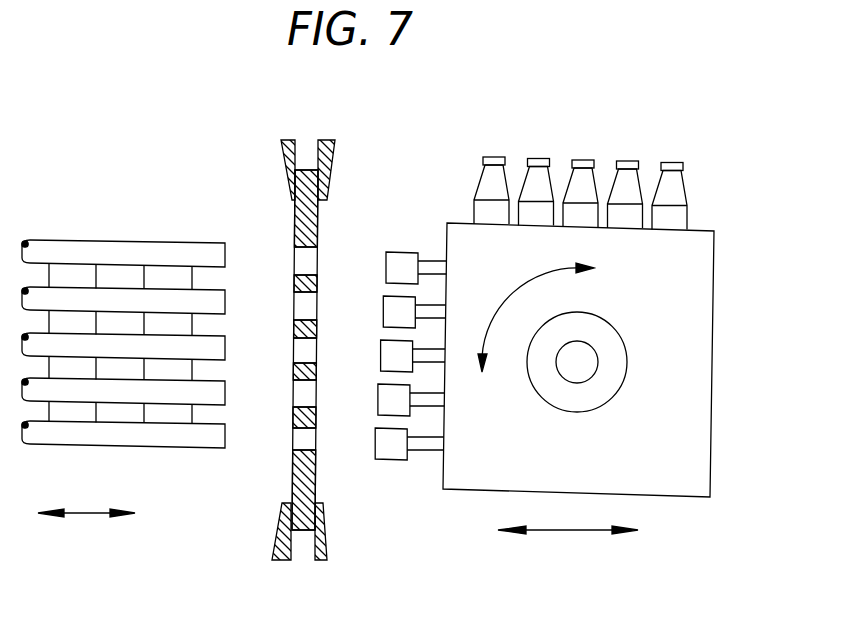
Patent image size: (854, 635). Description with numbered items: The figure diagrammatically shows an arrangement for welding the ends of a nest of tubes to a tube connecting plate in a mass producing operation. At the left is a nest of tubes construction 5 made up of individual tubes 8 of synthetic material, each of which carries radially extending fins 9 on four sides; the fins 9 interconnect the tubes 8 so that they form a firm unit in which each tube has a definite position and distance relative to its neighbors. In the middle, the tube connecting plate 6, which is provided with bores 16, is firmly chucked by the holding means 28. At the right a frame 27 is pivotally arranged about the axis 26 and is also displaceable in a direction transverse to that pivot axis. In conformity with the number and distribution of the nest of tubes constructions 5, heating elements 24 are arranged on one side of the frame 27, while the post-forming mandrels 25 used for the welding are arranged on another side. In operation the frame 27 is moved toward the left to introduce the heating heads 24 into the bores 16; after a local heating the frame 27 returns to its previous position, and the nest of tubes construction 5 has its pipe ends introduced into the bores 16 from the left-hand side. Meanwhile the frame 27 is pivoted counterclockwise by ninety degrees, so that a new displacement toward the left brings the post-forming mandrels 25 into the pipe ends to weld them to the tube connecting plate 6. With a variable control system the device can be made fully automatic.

The nest of tubes construction 5 is at (123, 321).
The tube 8 is at (127, 247).
The fins 9 is at (73, 408).
The bores 16 is at (297, 428).
The tube connecting plate 6 is at (269, 350).
The holding means 28 is at (276, 545).
The post-forming mandrels 25 is at (490, 183).
The axis 26 is at (577, 362).
The heating elements 24 is at (393, 446).
The frame 27 is at (665, 480).